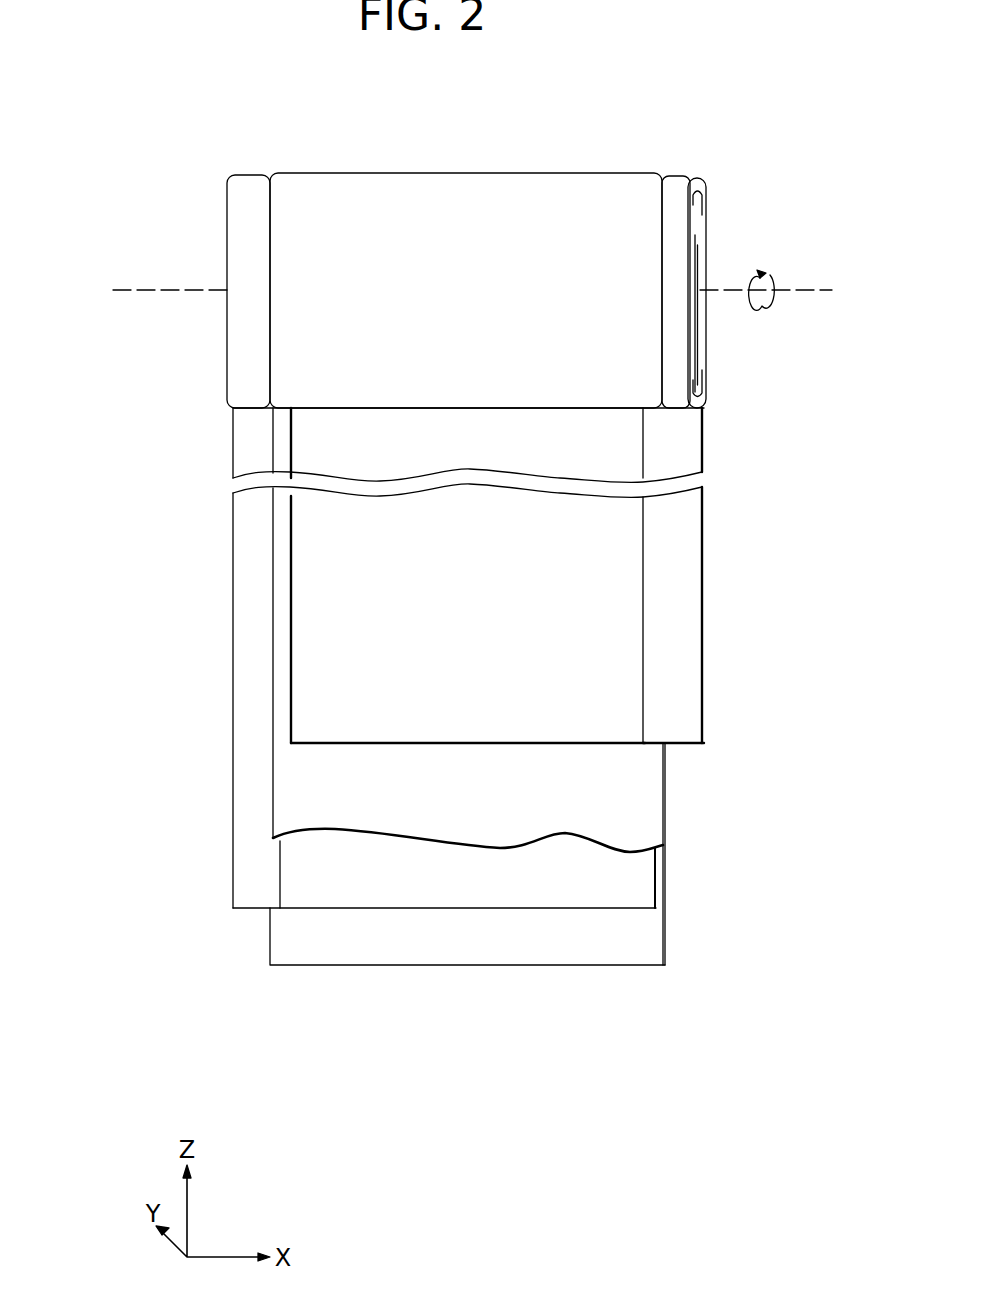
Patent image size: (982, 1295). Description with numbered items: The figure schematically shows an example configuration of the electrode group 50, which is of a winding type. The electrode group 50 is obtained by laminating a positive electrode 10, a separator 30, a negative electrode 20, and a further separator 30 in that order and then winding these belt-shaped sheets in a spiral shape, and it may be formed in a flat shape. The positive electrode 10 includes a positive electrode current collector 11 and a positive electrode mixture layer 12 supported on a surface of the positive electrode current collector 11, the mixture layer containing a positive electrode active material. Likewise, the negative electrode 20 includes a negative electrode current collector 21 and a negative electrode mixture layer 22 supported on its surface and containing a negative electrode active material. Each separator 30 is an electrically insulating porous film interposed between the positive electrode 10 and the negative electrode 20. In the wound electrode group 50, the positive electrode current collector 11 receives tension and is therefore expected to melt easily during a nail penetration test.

The electrode group 50 is at (205, 120).
The positive electrode 10 is at (828, 500).
The positive electrode current collector 11 is at (685, 608).
The positive electrode mixture layer 12 is at (633, 552).
The negative electrode 20 is at (96, 742).
The negative electrode current collector 21 is at (233, 803).
The negative electrode mixture layer 22 is at (325, 887).
The separator 30 is at (663, 807).